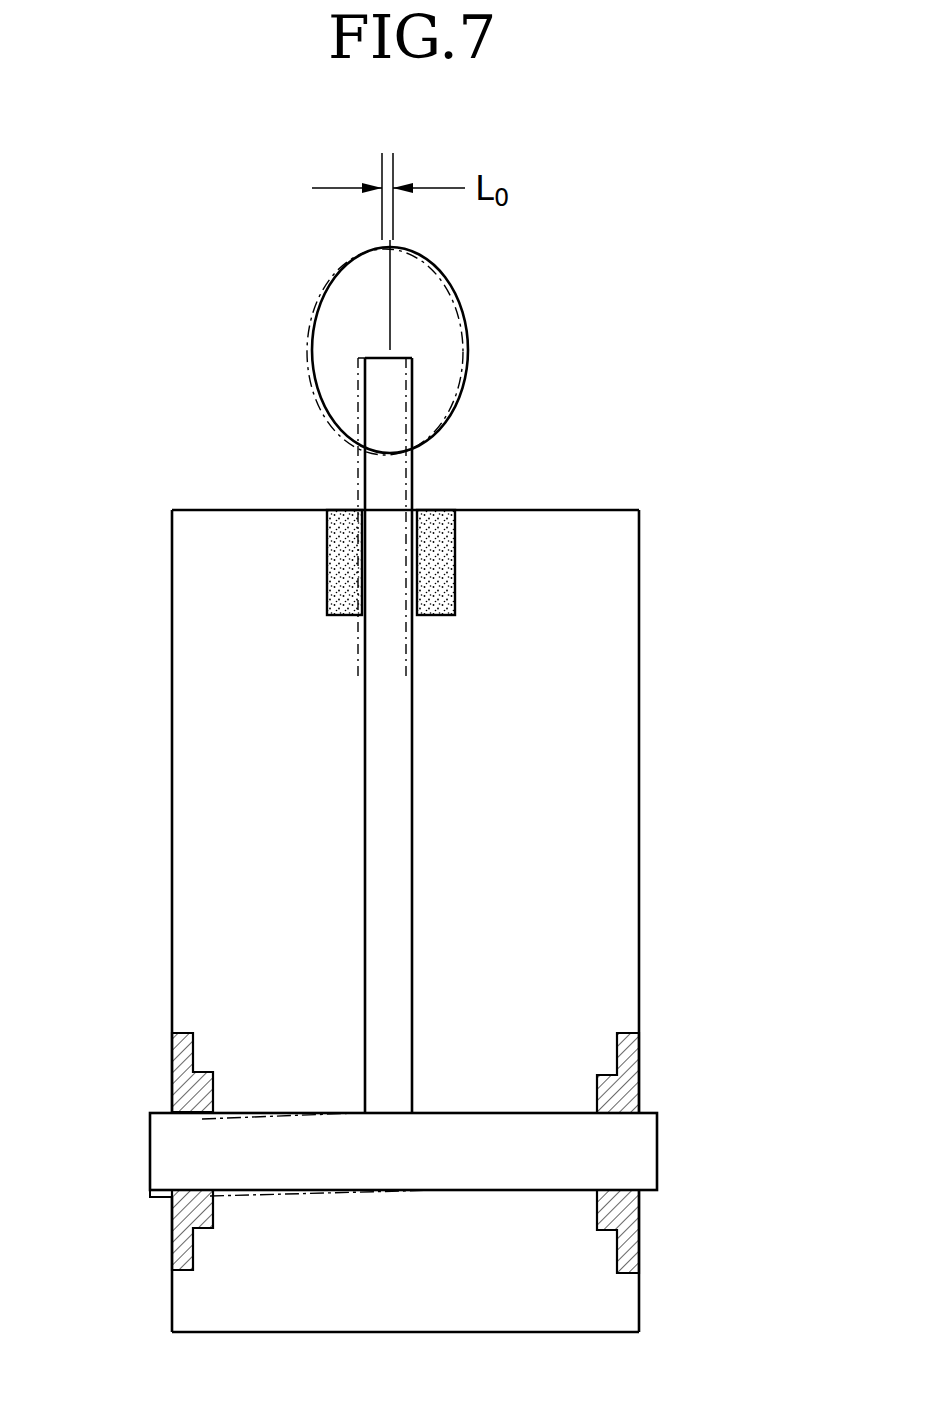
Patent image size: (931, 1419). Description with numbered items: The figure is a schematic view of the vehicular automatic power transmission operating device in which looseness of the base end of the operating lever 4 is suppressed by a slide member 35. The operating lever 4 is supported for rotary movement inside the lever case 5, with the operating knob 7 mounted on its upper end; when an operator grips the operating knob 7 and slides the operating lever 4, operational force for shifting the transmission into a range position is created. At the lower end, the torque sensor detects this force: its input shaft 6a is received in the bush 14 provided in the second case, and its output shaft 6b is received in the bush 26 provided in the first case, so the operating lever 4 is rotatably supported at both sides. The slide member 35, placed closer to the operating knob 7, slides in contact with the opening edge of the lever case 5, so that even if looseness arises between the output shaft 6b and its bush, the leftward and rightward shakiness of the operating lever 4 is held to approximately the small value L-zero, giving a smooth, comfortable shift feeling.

The operating lever 4 is at (412, 808).
The lever case 5 is at (640, 733).
The input shaft 6a is at (650, 1132).
The output shaft 6b is at (157, 1153).
The operating knob 7 is at (465, 313).
The bush 14 is at (637, 1070).
The bush 26 is at (172, 1075).
The slide member 35 is at (337, 558).